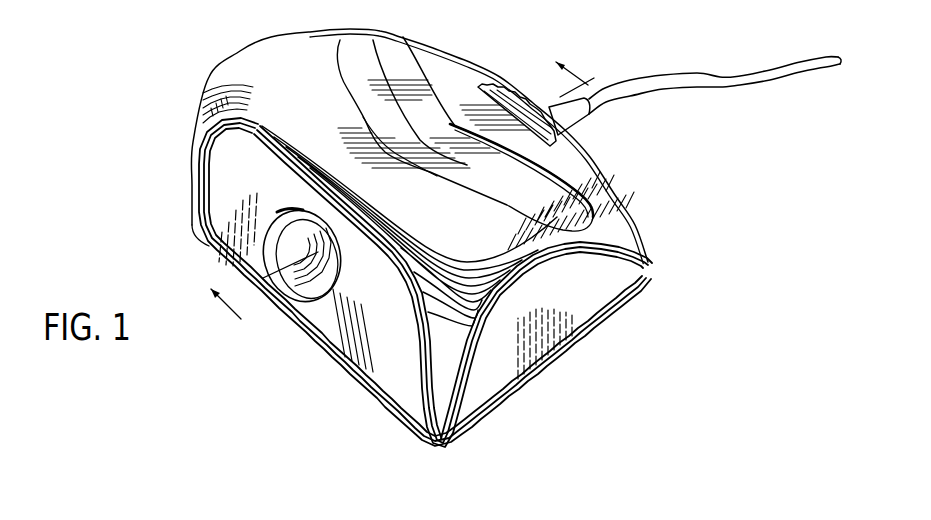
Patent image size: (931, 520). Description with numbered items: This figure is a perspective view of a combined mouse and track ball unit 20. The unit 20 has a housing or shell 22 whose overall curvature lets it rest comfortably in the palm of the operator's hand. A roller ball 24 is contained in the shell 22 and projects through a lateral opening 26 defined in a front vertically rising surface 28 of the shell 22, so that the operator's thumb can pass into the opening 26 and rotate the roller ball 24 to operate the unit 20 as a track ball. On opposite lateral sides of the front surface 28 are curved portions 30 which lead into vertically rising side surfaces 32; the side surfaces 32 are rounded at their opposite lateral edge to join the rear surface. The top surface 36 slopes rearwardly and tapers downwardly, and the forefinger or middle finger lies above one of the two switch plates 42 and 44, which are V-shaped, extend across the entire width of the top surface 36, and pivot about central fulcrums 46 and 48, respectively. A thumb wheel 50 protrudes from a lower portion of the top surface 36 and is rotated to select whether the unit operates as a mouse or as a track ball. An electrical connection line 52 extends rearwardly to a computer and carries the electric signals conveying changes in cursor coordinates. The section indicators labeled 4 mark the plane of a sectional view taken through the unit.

The combined mouse and track ball unit 20 is at (172, 101).
The housing or shell 22 is at (592, 291).
The roller ball 24 is at (310, 238).
The lateral opening 26 is at (298, 298).
The front vertically rising surface 28 is at (383, 367).
The curved portions 30 is at (208, 120).
The vertically rising side surfaces 32 is at (482, 390).
The top surface 36 is at (290, 73).
The switch plate 42 is at (303, 34).
The switch plate 44 is at (395, 55).
The central fulcrum 46 is at (363, 117).
The central fulcrum 48 is at (442, 128).
The thumb wheel 50 is at (587, 130).
The electrical connection line 52 is at (717, 85).
The section line 4- 4 is at (393, 175).